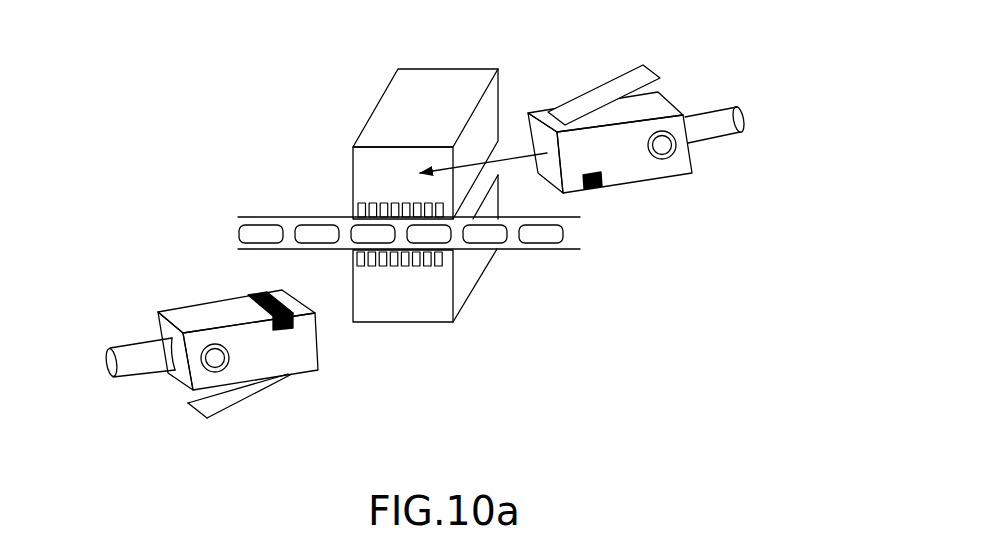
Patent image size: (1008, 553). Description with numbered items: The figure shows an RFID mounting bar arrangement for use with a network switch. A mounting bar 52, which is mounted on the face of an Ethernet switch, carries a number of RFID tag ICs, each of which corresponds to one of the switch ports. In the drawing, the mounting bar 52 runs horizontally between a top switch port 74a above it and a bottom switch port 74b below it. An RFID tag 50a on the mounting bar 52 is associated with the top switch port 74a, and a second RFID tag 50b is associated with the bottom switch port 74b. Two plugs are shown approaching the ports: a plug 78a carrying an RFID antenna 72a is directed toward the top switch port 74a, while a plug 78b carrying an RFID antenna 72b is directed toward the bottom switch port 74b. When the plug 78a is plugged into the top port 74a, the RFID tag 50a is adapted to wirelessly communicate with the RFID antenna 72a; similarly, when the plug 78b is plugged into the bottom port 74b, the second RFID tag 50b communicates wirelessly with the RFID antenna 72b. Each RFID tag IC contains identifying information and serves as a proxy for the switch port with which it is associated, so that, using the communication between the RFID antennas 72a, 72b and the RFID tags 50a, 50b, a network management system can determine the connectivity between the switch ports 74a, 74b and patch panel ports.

The RFID tag 50a is at (367, 238).
The second RFID tag 50b is at (440, 236).
The mounting bar 52 is at (582, 255).
The RFID antenna 72a is at (655, 160).
The RFID antenna 72b is at (225, 368).
The top switch port 74a is at (358, 105).
The bottom switch port 74b is at (442, 340).
The plug 78a is at (665, 68).
The plug 78b is at (188, 292).